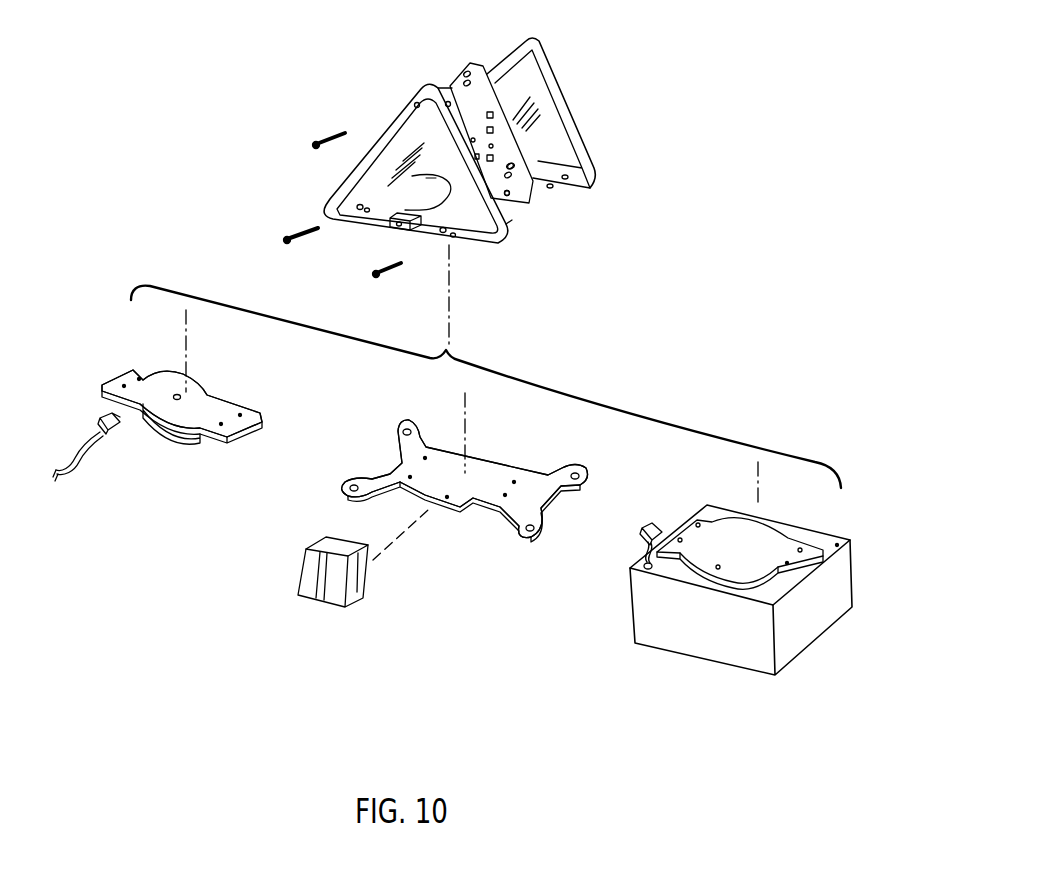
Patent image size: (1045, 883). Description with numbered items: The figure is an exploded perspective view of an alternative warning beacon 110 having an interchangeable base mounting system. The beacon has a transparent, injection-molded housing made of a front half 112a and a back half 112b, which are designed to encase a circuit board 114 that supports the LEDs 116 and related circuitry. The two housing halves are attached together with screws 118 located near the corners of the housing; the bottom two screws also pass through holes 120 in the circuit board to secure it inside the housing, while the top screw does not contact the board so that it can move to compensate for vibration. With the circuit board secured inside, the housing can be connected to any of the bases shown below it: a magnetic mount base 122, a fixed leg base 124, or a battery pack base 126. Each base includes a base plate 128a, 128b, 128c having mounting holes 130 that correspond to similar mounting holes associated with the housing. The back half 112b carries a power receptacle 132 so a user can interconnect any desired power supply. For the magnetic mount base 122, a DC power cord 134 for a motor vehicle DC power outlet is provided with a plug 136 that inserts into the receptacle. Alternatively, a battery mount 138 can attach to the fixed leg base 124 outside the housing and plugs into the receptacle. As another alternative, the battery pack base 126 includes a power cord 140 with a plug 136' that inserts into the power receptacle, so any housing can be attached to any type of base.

The beacon 110 is at (318, 62).
The front half 112a is at (563, 120).
The back half 112b is at (337, 178).
The circuit board 114 is at (447, 73).
The LEDs 116 is at (522, 163).
The screws 118 is at (330, 133).
The holes 120 is at (510, 200).
The magnetic mount base 122 is at (222, 388).
The fixed leg base 124 is at (507, 453).
The battery pack base 126 is at (800, 513).
The base plate 128a is at (210, 420).
The base plate 128b is at (487, 490).
The base plate 128c is at (742, 563).
The mounting holes 130 is at (138, 385).
The power receptacle 132 is at (393, 223).
The DC power cord 134 is at (85, 460).
The plug 136 is at (72, 406).
The plug 136' is at (634, 517).
The battery mount 138 is at (360, 595).
The power cord 140 is at (640, 550).